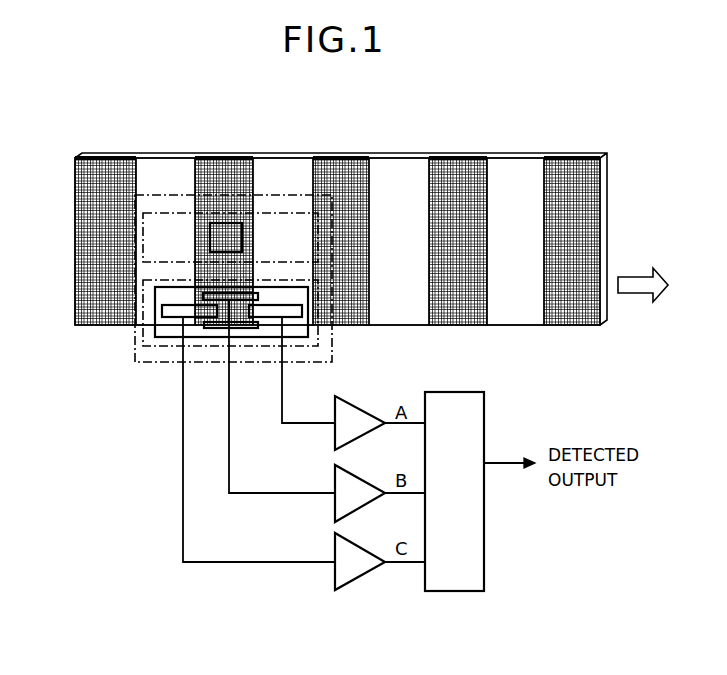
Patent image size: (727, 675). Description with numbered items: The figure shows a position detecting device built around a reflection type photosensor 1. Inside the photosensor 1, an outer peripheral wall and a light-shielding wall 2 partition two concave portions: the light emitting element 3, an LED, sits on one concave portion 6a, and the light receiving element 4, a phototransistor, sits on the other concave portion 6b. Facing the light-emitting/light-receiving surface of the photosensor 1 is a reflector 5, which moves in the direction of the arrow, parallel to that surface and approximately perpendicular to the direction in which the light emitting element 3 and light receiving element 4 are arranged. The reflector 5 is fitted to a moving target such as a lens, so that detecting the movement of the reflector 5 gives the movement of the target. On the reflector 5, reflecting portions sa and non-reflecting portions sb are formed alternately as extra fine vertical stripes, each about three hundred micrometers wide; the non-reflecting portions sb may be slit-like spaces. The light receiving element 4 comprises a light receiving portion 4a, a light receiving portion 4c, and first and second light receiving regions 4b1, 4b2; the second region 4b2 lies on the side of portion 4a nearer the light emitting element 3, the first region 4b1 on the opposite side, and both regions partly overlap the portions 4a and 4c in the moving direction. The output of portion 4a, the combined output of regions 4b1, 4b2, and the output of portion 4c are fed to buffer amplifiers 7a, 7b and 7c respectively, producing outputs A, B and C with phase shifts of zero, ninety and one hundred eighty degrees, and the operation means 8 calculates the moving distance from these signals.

The reflection type photosensor 1 is at (135, 352).
The light-shielding wall 2 is at (173, 279).
The light emitting element 3 is at (230, 223).
The light receiving element 4 is at (230, 350).
The light receiving portion 4a is at (300, 316).
The first light receiving region 4b1 is at (208, 340).
The second light receiving region 4b2 is at (239, 328).
The light receiving portion 4c is at (190, 316).
The reflector 5 is at (341, 210).
The concave portion 6a is at (143, 232).
The concave portion 6b is at (145, 305).
The buffer amplifier 7a is at (353, 404).
The buffer amplifier 7b is at (335, 480).
The buffer amplifier 7c is at (353, 582).
The operation means 8 is at (490, 420).
The reflecting portion sa is at (172, 166).
The non-reflecting portion sb is at (107, 166).